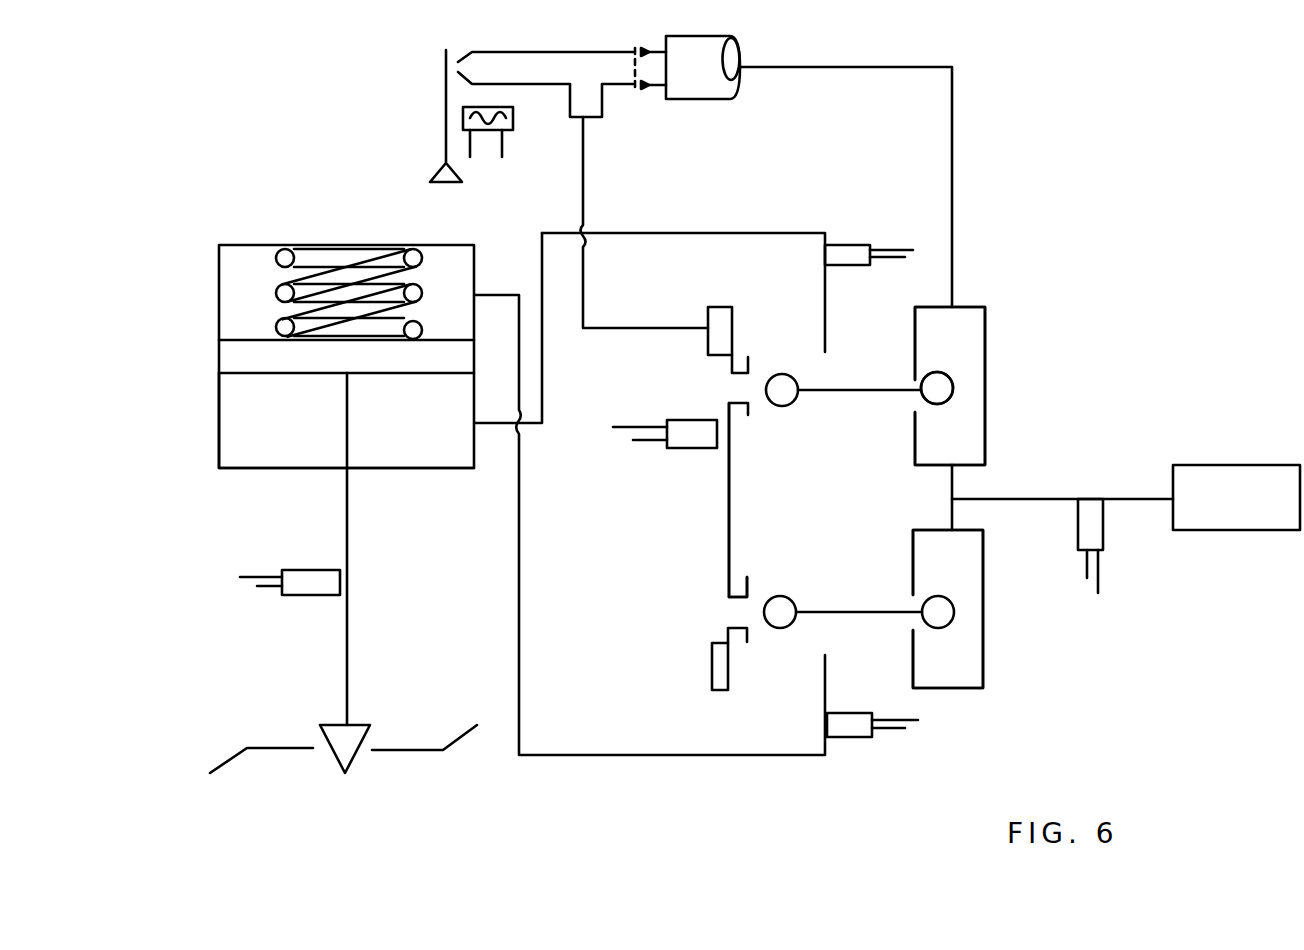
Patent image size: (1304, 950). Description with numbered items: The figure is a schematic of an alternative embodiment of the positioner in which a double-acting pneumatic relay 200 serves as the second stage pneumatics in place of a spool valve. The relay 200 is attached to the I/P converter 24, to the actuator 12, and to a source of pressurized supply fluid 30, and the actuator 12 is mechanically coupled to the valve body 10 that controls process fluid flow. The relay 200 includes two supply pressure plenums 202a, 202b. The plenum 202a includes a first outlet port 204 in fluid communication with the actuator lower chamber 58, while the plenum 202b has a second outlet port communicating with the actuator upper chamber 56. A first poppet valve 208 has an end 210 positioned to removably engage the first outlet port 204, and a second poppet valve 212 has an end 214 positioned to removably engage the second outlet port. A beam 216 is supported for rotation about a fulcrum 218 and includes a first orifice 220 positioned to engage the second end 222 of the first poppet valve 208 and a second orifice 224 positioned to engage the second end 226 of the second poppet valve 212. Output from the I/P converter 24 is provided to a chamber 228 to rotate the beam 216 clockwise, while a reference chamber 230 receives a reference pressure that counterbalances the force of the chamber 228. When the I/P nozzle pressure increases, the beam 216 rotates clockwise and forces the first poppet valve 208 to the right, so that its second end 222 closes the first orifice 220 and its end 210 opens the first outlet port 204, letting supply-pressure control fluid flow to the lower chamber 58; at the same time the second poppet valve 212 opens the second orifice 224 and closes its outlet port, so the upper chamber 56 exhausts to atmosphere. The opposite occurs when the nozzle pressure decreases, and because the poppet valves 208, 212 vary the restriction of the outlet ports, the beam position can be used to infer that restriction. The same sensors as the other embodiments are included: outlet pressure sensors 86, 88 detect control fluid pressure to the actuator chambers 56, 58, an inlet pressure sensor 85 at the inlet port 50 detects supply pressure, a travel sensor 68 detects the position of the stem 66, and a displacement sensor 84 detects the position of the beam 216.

The valve body 10 is at (343, 745).
The actuator 12 is at (218, 431).
The I/P converter 24 is at (672, 108).
The source of pressurized supply fluid 30 is at (1235, 518).
The inlet port 50 is at (965, 498).
The actuator upper chamber 56 is at (228, 307).
The actuator lower chamber 58 is at (242, 448).
The stem 66 is at (347, 540).
The valve travel sensor 68 is at (312, 587).
The displacement sensor 84 is at (688, 438).
The inlet pressure sensor 85 is at (1087, 523).
The first outlet pressure sensor 86 is at (847, 728).
The second outlet pressure sensor 88 is at (848, 253).
The double-acting pneumatic relay 200 is at (1062, 330).
The supply pressure plenum 202a is at (973, 425).
The supply pressure plenum 202b is at (973, 648).
The first outlet port 204 is at (910, 382).
The first poppet valve 208 is at (840, 391).
The end of first poppet valve 210 is at (943, 385).
The second poppet valve 212 is at (838, 610).
The end of second poppet valve 214 is at (942, 613).
The beam 216 is at (727, 545).
The fulcrum 218 is at (732, 498).
The first orifice 220 is at (740, 373).
The second end of first poppet valve 222 is at (782, 373).
The second orifice 224 is at (730, 600).
The second end of second poppet valve 226 is at (778, 620).
The chamber 228 is at (718, 312).
The reference chamber 230 is at (713, 683).